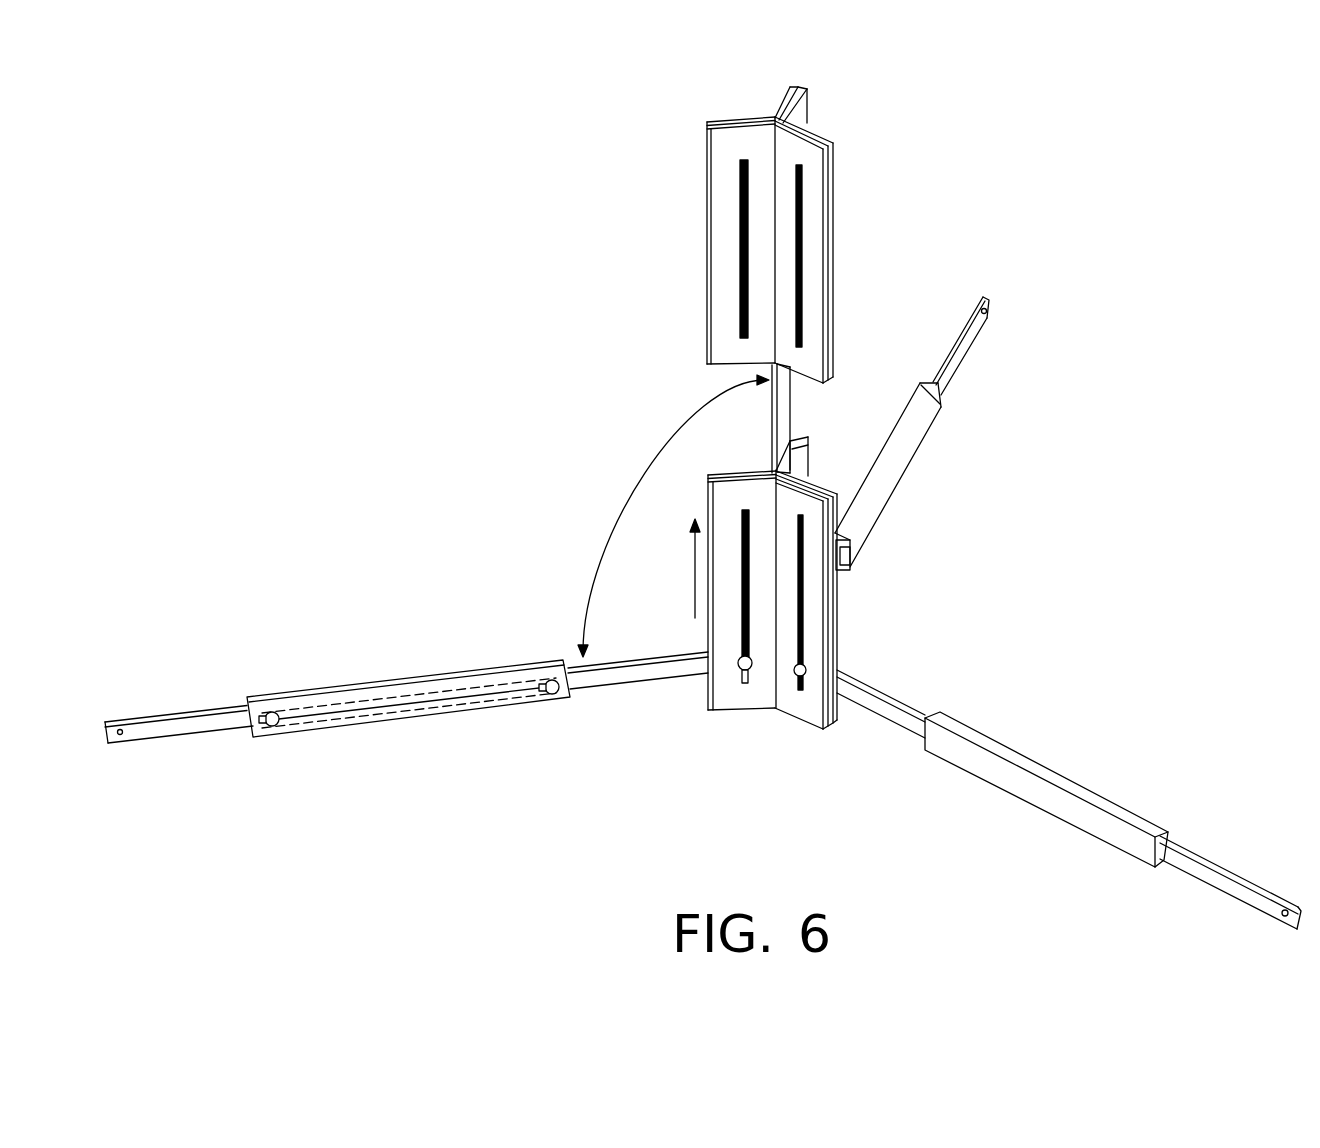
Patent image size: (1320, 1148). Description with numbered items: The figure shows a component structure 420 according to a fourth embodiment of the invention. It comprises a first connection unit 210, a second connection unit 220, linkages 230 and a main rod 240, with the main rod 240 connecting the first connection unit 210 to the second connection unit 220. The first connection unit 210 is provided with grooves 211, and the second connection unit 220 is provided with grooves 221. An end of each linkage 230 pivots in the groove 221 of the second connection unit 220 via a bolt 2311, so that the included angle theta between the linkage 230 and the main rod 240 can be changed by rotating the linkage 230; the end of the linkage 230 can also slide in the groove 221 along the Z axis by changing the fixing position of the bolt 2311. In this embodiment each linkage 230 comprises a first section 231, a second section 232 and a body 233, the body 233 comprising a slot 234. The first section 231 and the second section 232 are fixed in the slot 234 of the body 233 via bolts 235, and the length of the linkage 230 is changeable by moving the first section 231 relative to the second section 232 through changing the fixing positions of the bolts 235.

The component structure 420 is at (190, 78).
The first connection unit 210 is at (812, 235).
The grooves 211 is at (800, 243).
The main rod 240 is at (783, 410).
The second connection unit 220 is at (760, 595).
The grooves 221 is at (742, 634).
The bolt 2311 is at (738, 669).
The linkage 230 is at (703, 613).
The first section 231 is at (633, 674).
The second section 232 is at (205, 731).
The body 233 is at (468, 708).
The slot 234 is at (393, 711).
The bolts 235 is at (432, 754).